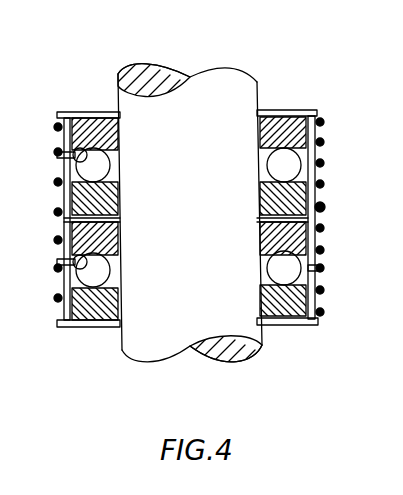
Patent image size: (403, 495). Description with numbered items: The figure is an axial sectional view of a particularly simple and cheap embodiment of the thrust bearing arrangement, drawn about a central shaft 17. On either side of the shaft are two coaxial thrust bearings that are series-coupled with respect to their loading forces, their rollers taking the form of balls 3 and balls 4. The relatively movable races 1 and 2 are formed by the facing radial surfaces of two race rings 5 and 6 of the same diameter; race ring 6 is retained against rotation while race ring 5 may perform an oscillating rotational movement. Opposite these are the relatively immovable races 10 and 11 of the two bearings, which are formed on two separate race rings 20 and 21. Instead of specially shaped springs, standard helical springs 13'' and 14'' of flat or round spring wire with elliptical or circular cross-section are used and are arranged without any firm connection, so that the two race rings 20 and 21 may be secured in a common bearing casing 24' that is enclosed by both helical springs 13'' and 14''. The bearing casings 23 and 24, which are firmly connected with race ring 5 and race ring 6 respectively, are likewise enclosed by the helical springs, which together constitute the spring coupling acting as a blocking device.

The shaft 17 is at (152, 76).
The race ring 5 is at (84, 135).
The race ring 6 is at (101, 307).
The relatively movable race 1 is at (74, 153).
The separate race ring 21 is at (63, 258).
The relatively movable race 2 is at (320, 278).
The balls 3 is at (291, 177).
The balls 4 is at (291, 280).
The opposed race 10 is at (318, 172).
The opposed race 11 is at (65, 277).
The standard helical spring 13'' is at (348, 138).
The standard helical spring 14'' is at (350, 298).
The separate race ring 20 is at (80, 209).
The bearing casing 23 is at (54, 158).
The bearing casing 24 is at (46, 321).
The common bearing casing 24' is at (344, 218).